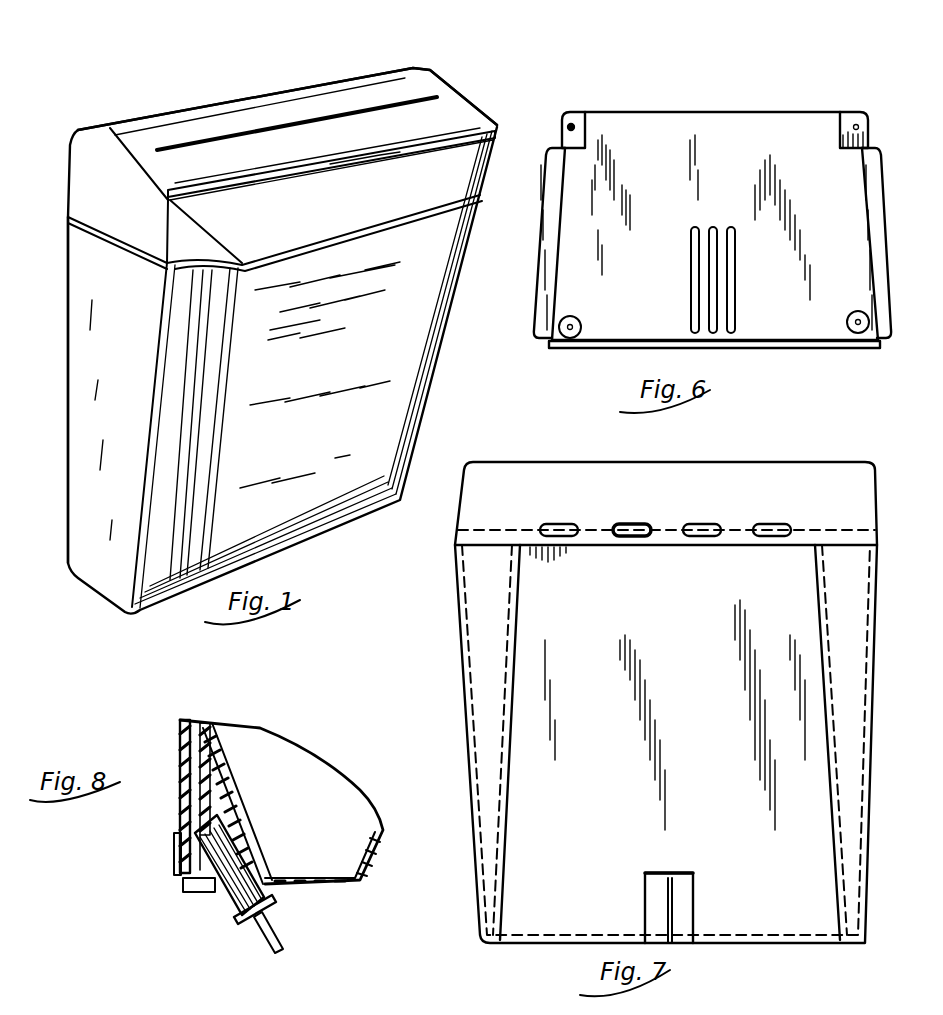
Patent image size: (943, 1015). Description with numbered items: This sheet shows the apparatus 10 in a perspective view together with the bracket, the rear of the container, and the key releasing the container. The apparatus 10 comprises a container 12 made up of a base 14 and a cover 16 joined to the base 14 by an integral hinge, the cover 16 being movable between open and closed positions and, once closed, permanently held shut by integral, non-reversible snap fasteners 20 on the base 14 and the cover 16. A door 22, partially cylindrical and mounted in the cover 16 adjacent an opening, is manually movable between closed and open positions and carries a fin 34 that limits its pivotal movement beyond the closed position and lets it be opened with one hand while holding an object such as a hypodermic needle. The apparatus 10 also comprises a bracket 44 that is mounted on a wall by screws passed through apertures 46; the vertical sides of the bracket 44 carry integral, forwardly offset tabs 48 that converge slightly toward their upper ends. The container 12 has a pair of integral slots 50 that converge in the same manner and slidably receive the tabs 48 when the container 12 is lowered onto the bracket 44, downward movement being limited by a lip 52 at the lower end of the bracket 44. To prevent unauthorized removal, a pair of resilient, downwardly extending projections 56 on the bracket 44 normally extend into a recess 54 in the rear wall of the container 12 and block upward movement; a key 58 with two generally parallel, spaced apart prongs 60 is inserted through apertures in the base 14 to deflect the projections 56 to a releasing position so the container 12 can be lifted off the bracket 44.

In FIG. 1, the apparatus 10 is at (262, 90).
In FIG. 1, the container 12 is at (105, 565).
In FIG. 1, the base 14 is at (82, 370).
In FIG. 7, the base 14 is at (477, 632).
In FIG. 8, the base 14 is at (335, 887).
In FIG. 1, the cover 16 is at (152, 112).
In FIG. 7, the cover 16 is at (701, 470).
In FIG. 7, the snap fasteners 20 is at (628, 522).
In FIG. 1, the door 22 is at (440, 80).
In FIG. 1, the fin 34 is at (292, 174).
In FIG. 6, the bracket 44 is at (705, 108).
In FIG. 6, the apertures 46 is at (574, 117).
In FIG. 6, the tabs 48 is at (542, 258).
In FIG. 7, the slots 50 is at (520, 745).
In FIG. 6, the lip 52 is at (640, 345).
In FIG. 8, the lip 52 is at (200, 892).
In FIG. 7, the recess 54 is at (688, 885).
In FIG. 8, the recess 54 is at (180, 868).
In FIG. 6, the projections 56 is at (718, 290).
In FIG. 8, the projections 56 is at (178, 790).
In FIG. 8, the key 58 is at (230, 933).
In FIG. 8, the prongs 60 is at (218, 830).